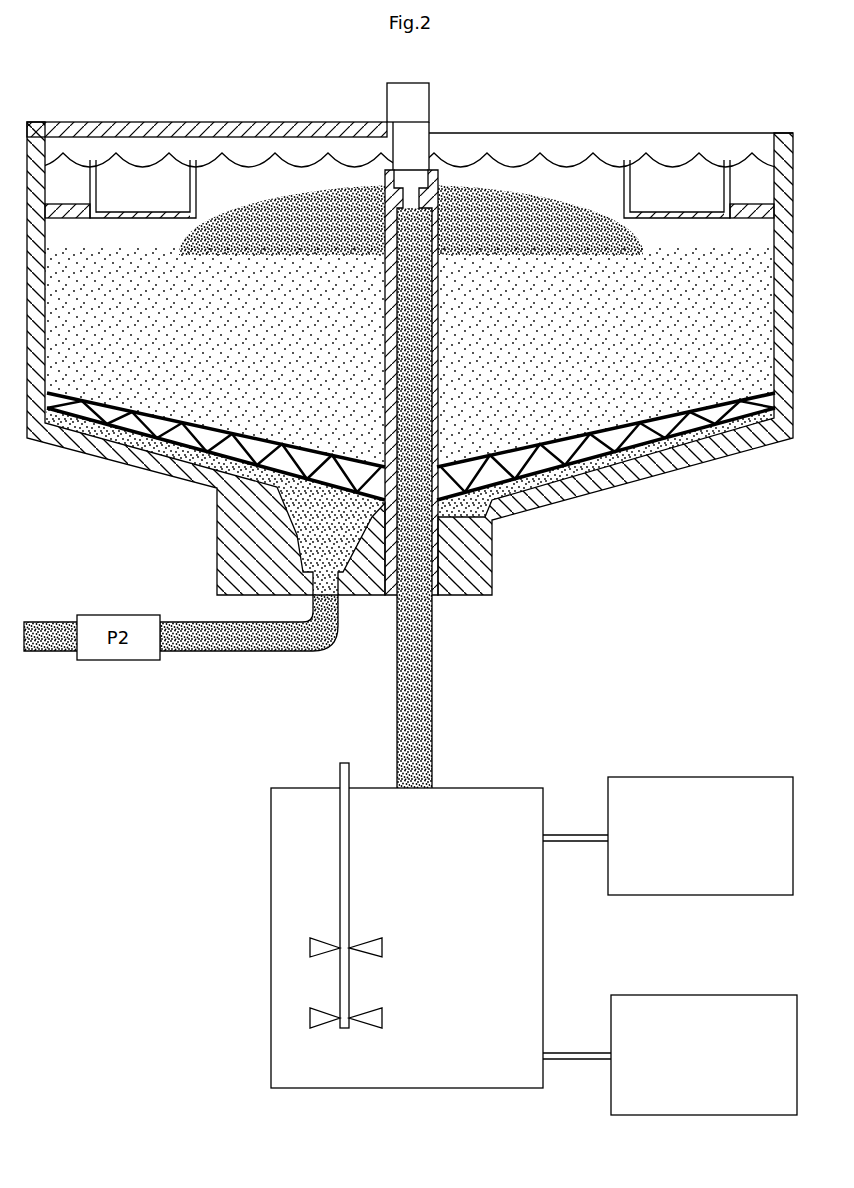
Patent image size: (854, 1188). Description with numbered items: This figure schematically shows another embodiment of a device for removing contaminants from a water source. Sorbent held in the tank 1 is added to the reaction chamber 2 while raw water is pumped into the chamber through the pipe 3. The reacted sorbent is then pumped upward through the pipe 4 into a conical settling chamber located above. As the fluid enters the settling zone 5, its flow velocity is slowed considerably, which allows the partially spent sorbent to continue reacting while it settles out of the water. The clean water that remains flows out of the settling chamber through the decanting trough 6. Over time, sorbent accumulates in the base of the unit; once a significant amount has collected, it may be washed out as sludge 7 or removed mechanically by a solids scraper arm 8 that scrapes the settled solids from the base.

The tank 1 is at (692, 777).
The reaction chamber 2 is at (505, 788).
The pipe 3 is at (703, 995).
The pipe 4 is at (433, 642).
The settling zone 5 is at (548, 180).
The decanting trough 6 is at (706, 178).
The sludge 7 is at (250, 512).
The solids scraper arm 8 is at (703, 430).